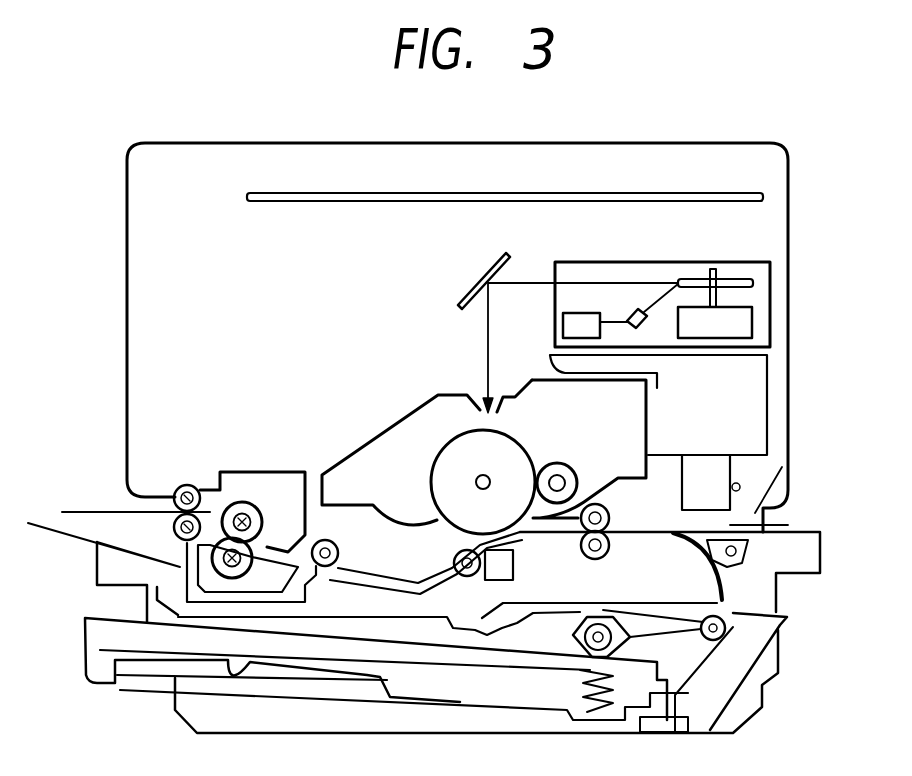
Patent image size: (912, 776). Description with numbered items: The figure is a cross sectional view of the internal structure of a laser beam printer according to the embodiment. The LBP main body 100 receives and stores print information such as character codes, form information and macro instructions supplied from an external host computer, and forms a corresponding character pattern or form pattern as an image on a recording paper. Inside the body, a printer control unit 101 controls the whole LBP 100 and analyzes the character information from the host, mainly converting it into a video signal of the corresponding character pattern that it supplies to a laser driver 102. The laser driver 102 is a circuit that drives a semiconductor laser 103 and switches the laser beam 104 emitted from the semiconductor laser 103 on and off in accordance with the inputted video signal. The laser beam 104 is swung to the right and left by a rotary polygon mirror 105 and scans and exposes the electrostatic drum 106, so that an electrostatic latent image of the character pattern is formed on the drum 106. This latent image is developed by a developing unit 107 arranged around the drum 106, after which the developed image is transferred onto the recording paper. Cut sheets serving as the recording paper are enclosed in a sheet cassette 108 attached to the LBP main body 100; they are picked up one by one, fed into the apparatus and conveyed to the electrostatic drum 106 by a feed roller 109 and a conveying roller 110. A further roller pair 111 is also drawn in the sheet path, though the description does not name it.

The LBP main body 100 is at (722, 142).
The printer control unit 101 is at (753, 196).
The laser driver 102 is at (558, 322).
The semiconductor laser 103 is at (648, 327).
The laser beam 104 is at (653, 282).
The rotary polygon mirror 105 is at (756, 281).
The electrostatic drum 106 is at (453, 445).
The developing unit 107 is at (360, 465).
The sheet cassette 108 is at (80, 645).
The feed roller 109 is at (572, 637).
The conveying roller 110 is at (735, 632).
The feed rollers 111 is at (587, 565).